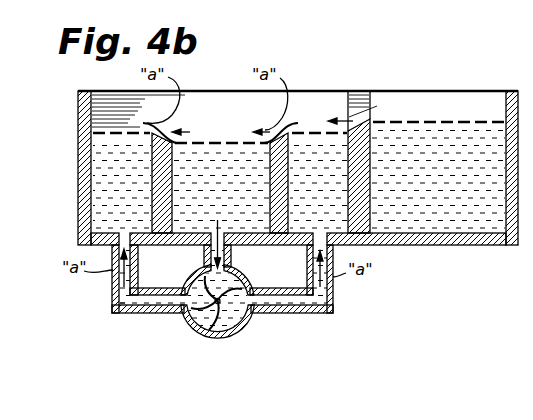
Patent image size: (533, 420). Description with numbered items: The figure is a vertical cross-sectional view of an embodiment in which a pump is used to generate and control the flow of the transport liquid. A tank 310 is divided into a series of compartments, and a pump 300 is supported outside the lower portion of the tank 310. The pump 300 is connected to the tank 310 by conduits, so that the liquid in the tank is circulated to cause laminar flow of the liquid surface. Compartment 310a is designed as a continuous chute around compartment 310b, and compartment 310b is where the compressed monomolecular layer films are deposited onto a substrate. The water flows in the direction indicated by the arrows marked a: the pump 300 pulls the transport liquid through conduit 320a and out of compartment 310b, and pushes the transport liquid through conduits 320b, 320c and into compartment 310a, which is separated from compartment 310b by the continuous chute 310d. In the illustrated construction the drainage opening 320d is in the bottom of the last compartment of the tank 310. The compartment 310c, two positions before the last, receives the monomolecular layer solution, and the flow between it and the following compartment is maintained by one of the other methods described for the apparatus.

The tank 310 is at (362, 48).
The compartment 310a is at (146, 185).
The compartment 310b is at (240, 193).
The (n−2)th compartment 310c is at (462, 196).
The continuous chute 310d is at (153, 147).
The conduit 320a is at (231, 263).
The conduit 320b is at (113, 297).
The conduit 320c is at (334, 296).
The drainage opening 320d is at (170, 270).
The pump 300 is at (231, 335).